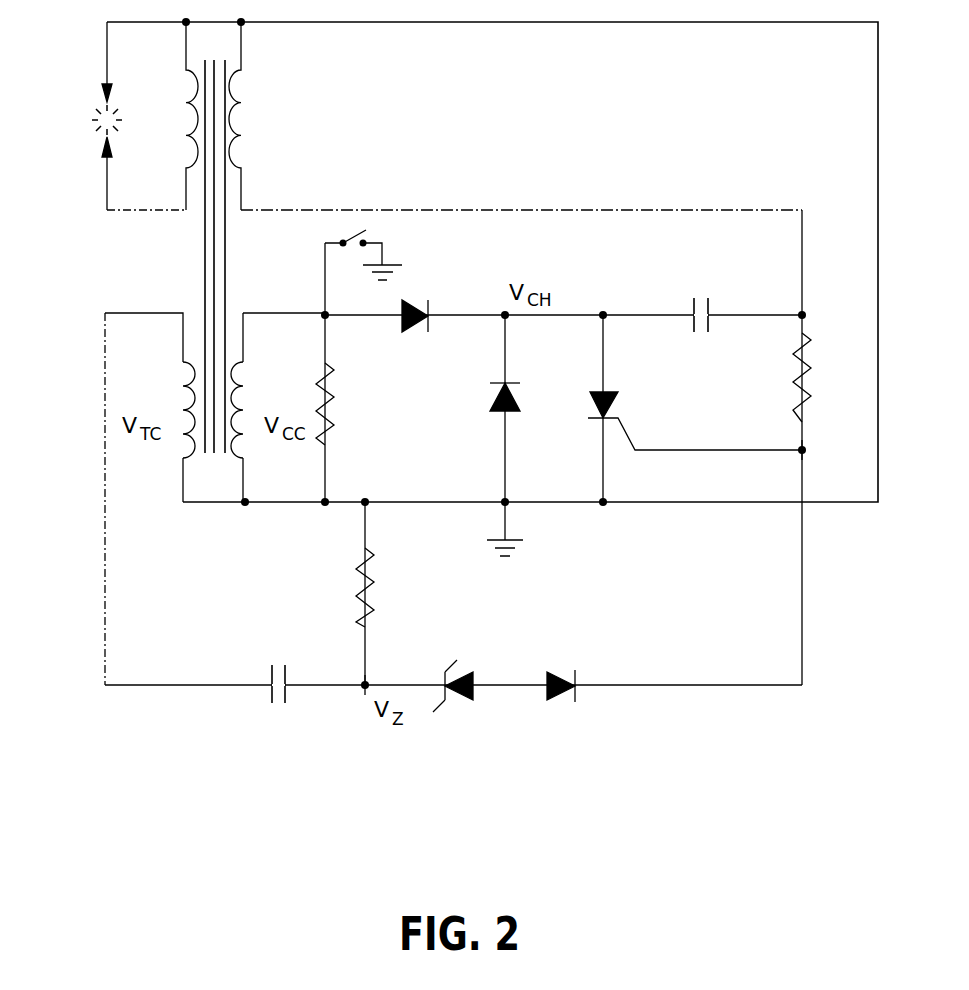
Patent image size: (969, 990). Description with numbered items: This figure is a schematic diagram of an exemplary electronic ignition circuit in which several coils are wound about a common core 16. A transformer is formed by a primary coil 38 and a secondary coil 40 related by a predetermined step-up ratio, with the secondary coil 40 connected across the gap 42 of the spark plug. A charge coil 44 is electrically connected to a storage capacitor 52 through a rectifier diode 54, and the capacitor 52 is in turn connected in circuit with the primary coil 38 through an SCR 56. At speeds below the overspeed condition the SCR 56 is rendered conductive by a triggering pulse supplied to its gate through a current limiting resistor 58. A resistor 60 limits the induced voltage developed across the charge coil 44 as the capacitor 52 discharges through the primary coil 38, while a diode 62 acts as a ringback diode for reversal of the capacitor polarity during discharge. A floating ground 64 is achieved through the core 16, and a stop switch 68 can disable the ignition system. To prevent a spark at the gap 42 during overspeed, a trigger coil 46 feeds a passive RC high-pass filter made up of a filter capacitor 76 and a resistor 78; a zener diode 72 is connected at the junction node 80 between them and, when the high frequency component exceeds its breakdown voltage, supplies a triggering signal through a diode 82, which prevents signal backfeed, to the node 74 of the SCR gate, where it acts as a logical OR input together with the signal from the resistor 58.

The core 16 is at (205, 262).
The primary coil 38 is at (247, 128).
The secondary coil 40 is at (190, 97).
The gap 42 is at (92, 112).
The charge coil 44 is at (236, 458).
The trigger coil 46 is at (190, 460).
The storage capacitor 52 is at (700, 335).
The rectifier diode 54 is at (410, 332).
The SCR 56 is at (620, 405).
The current limiting resistor 58 is at (812, 345).
The resistor 60 is at (337, 428).
The diode 62 is at (495, 400).
The floating ground 64 is at (385, 262).
The stop switch 68 is at (365, 232).
The zener diode 72 is at (472, 670).
The node 74 is at (808, 450).
The filter capacitor 76 is at (282, 668).
The resistor 78 is at (378, 575).
The junction node 80 is at (366, 690).
The diode 82 is at (556, 700).